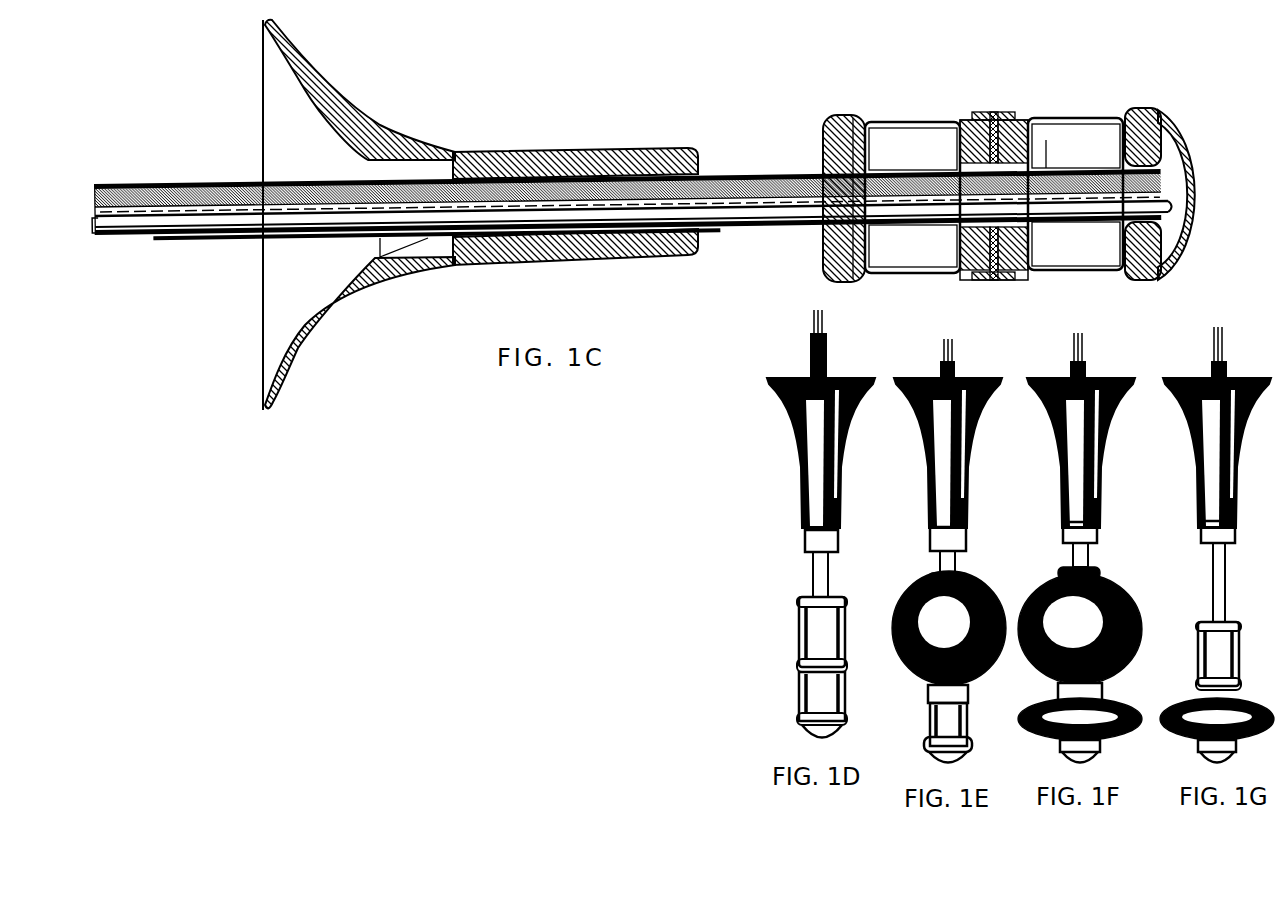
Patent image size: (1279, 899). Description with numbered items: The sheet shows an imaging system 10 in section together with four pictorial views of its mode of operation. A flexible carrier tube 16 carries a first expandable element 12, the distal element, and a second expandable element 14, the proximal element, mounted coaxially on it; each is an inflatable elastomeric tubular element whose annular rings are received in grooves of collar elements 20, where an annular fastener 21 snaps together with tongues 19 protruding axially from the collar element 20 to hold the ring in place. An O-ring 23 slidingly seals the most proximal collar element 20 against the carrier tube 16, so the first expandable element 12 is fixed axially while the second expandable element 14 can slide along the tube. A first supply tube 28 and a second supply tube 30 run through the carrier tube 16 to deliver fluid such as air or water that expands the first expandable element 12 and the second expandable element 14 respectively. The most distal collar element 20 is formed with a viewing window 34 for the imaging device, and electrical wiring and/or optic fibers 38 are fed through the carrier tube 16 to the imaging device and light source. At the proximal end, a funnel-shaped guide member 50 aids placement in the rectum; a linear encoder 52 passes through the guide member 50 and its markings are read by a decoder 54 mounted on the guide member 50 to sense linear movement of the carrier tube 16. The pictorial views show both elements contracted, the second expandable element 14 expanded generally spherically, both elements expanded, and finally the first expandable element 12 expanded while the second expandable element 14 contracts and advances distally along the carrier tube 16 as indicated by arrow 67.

In FIG. 1C, the imaging system 10 is at (820, 44).
In FIG. 1C, the first expandable element 12 is at (1075, 116).
In FIG. 1D, the first expandable element 12 is at (799, 707).
In FIG. 1E, the first expandable element 12 is at (930, 725).
In FIG. 1F, the first expandable element 12 is at (1042, 735).
In FIG. 1G, the first expandable element 12 is at (1184, 703).
In FIG. 1C, the second expandable element 14 is at (912, 120).
In FIG. 1D, the second expandable element 14 is at (799, 640).
In FIG. 1E, the second expandable element 14 is at (908, 598).
In FIG. 1F, the second expandable element 14 is at (1050, 580).
In FIG. 1G, the second expandable element 14 is at (1199, 665).
In FIG. 1C, the carrier tube 16 is at (726, 175).
In FIG. 1D, the carrier tube 16 is at (816, 578).
In FIG. 1E, the carrier tube 16 is at (940, 561).
In FIG. 1F, the carrier tube 16 is at (1072, 553).
In FIG. 1G, the carrier tube 16 is at (1232, 579).
In FIG. 1C, the tongues 19 is at (1046, 153).
In FIG. 1C, the collar element 20 is at (994, 112).
In FIG. 1C, the annular fastener 21 is at (1033, 160).
In FIG. 1C, the O-ring 23 is at (819, 242).
In FIG. 1C, the first supply tube 28 is at (1075, 203).
In FIG. 1C, the second supply tube 30 is at (910, 202).
In FIG. 1C, the viewing window 34 is at (1190, 165).
In FIG. 1C, the electrical wiring and/or optic fibers 38 is at (94, 192).
In FIG. 1C, the guide member 50 is at (357, 110).
In FIG. 1D, the guide member 50 is at (783, 410).
In FIG. 1E, the guide member 50 is at (919, 412).
In FIG. 1F, the guide member 50 is at (1050, 405).
In FIG. 1G, the guide member 50 is at (1192, 406).
In FIG. 1C, the linear encoder 52 is at (251, 183).
In FIG. 1C, the decoder 54 is at (429, 247).
In FIG. 1G, the arrow 67 is at (1203, 608).